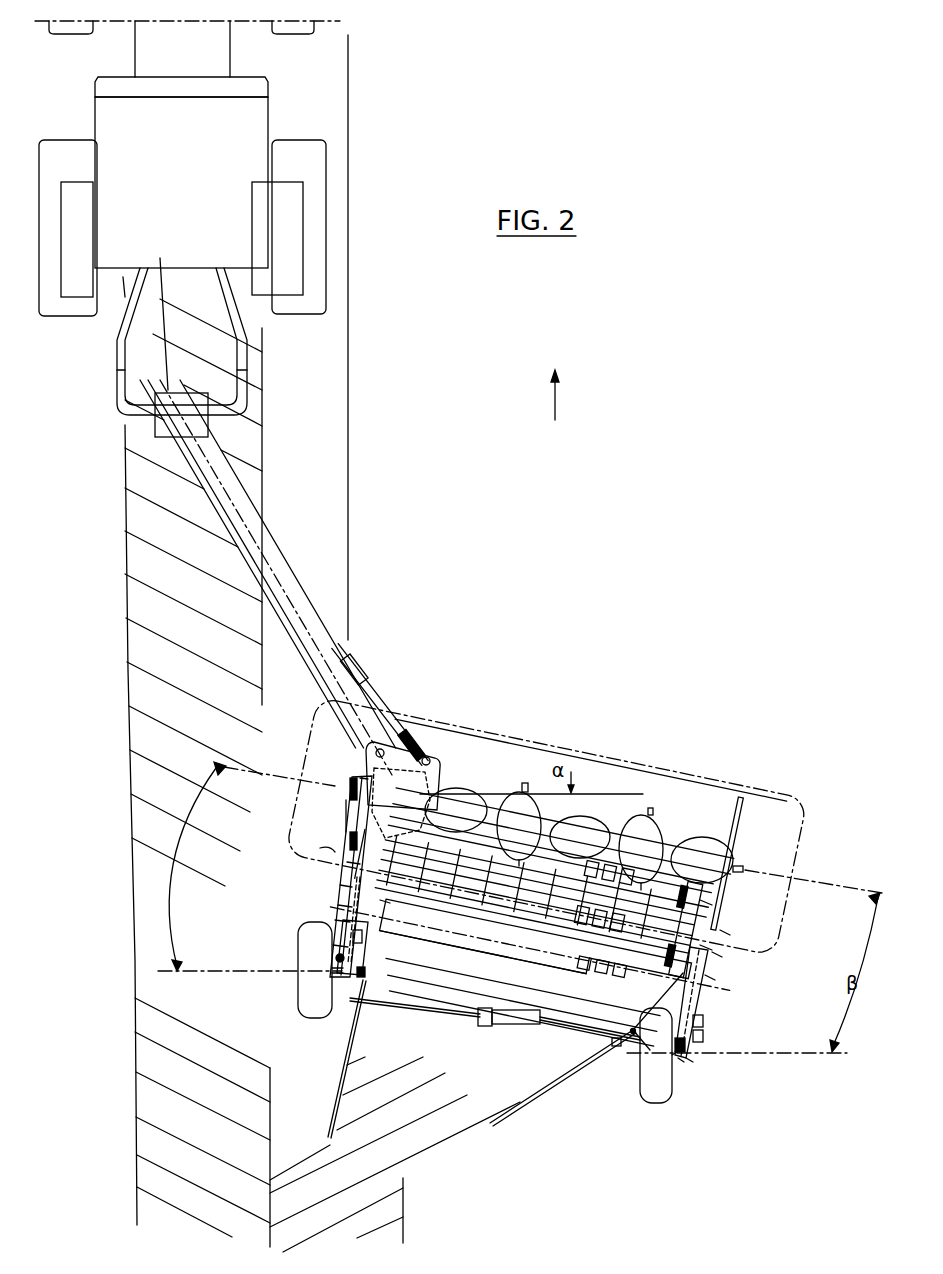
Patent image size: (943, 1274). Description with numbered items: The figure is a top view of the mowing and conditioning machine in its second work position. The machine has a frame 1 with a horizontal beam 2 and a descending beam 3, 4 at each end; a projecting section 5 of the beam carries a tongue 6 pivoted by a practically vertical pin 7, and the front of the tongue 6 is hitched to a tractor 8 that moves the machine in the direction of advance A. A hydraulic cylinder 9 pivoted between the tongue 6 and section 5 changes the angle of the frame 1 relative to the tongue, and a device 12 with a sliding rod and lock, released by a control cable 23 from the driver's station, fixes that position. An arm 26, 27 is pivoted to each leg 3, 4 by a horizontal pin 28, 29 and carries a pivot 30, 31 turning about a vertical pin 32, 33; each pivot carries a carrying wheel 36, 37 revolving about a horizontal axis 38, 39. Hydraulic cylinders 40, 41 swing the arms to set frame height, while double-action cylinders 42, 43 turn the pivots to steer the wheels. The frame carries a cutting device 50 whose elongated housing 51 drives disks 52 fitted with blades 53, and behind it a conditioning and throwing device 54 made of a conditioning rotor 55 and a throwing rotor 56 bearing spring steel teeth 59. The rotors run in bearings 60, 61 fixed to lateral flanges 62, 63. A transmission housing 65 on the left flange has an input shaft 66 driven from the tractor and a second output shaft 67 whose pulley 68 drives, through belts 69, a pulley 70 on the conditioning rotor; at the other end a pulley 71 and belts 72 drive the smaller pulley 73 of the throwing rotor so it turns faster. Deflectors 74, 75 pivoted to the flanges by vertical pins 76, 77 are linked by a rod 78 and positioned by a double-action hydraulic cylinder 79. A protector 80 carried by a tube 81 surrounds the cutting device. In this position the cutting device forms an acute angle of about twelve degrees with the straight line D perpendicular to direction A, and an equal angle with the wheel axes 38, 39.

The frame 1 is at (338, 892).
The horizontal beam 2 is at (468, 935).
The descending beam 3 is at (336, 905).
The descending beam 4 is at (708, 990).
The projecting section 5 is at (433, 764).
The tongue 6 is at (237, 520).
The vertical pin 7 is at (318, 738).
The tractor 8 is at (268, 258).
The hydraulic cylinder 9 is at (383, 693).
The device 12 is at (365, 662).
The control cable 23 is at (223, 470).
The arm 26 is at (330, 950).
The arm 27 is at (702, 1005).
The horizontal pin 28 is at (352, 866).
The horizontal pin 29 is at (700, 960).
The pivot 30 is at (346, 990).
The pivot 31 is at (681, 1065).
The vertical pin 32 is at (326, 985).
The vertical pin 33 is at (691, 1065).
The carrying wheel 36 is at (305, 1000).
The carrying wheel 37 is at (655, 1090).
The horizontal axis 38 is at (258, 973).
The horizontal axis 39 is at (640, 1060).
The hydraulic cylinder 40 is at (333, 924).
The hydraulic cylinder 41 is at (702, 1028).
The double-action hydraulic cylinder 42 is at (366, 942).
The double-action hydraulic cylinder 43 is at (690, 1062).
The cutting device 50 is at (745, 851).
The housing 51 is at (620, 833).
The disk 52 is at (655, 830).
The blade 53 is at (650, 815).
The conditioning and throwing device 54 is at (511, 962).
The conditioning rotor 55 is at (703, 948).
The throwing rotor 56 is at (633, 960).
The spring steel teeth 59 is at (583, 970).
The bearing 60 is at (330, 852).
The bearing 61 is at (386, 905).
The lateral flange 62 is at (380, 978).
The lateral flange 63 is at (702, 908).
The transmission housing 65 is at (415, 760).
The input shaft 66 is at (390, 752).
The second output shaft 67 is at (355, 760).
The pulley 68 is at (350, 790).
The belts 69 is at (346, 815).
The pulley 70 is at (345, 842).
The pulley 71 is at (723, 933).
The belts 72 is at (715, 955).
The pulley 73 is at (707, 978).
The deflector 74 is at (330, 1125).
The deflector 75 is at (522, 1115).
The vertical pin 76 is at (362, 975).
The vertical pin 77 is at (632, 1040).
The rod 78 is at (492, 1028).
The double-action hydraulic cylinder 79 is at (525, 1025).
The protector 80 is at (800, 805).
The tube 81 is at (700, 857).
The direction of advance A is at (568, 395).
The straight line D is at (600, 794).